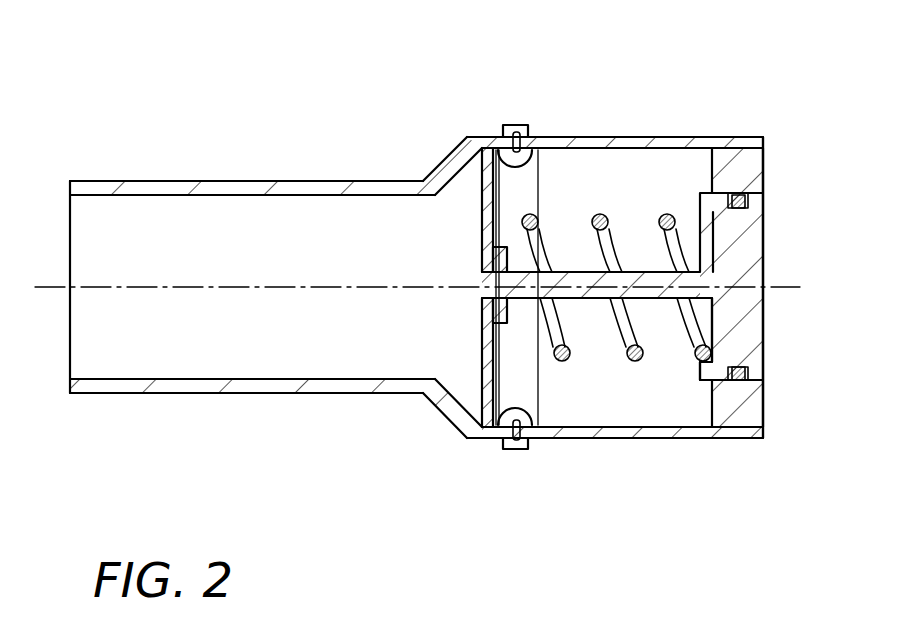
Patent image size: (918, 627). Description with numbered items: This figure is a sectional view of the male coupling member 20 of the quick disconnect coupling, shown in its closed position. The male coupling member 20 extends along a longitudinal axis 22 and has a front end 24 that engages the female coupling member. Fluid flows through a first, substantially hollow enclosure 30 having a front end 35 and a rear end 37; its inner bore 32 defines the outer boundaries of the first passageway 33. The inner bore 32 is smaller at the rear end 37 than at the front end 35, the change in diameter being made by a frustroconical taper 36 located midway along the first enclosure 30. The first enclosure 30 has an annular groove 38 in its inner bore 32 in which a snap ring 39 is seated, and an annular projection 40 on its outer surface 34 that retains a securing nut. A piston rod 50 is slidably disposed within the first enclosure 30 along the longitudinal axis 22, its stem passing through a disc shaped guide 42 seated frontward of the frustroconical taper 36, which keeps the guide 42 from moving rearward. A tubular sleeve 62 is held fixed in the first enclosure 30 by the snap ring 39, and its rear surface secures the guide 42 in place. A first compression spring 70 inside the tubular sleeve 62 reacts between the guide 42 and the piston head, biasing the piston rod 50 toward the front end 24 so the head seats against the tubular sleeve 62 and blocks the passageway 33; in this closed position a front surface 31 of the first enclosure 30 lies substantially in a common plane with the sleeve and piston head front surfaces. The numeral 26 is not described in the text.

The male coupling member 20 is at (110, 102).
The longitudinal axis 22 is at (147, 289).
The front end 24 is at (776, 252).
The inlet end 26 is at (48, 405).
The first enclosure 30 is at (179, 178).
The front surface 31 is at (764, 136).
The inner bore 32 is at (152, 196).
The first passageway 33 is at (346, 228).
The outer surface 34 is at (260, 181).
The front end 35 is at (772, 440).
The frustroconical taper 36 is at (443, 394).
The rear end 37 is at (70, 393).
The annular groove 38 is at (531, 136).
The snap ring 39 is at (513, 133).
The annular projection 40 is at (503, 127).
The guide 42 is at (481, 195).
The piston rod 50 is at (752, 352).
The tubular sleeve 62 is at (765, 183).
The first compression spring 70 is at (604, 212).